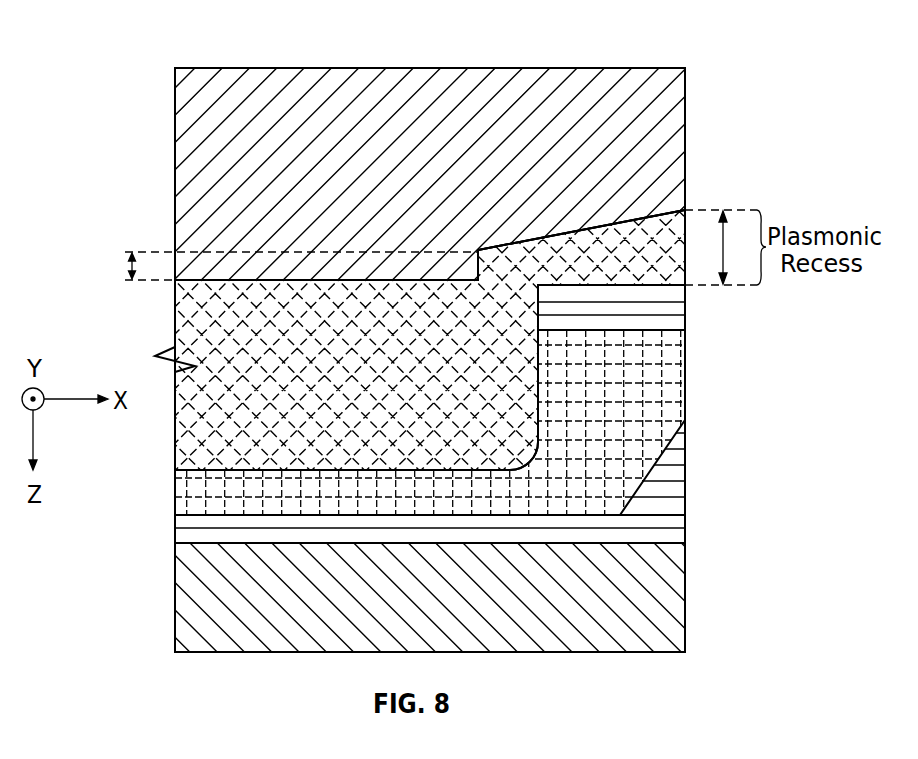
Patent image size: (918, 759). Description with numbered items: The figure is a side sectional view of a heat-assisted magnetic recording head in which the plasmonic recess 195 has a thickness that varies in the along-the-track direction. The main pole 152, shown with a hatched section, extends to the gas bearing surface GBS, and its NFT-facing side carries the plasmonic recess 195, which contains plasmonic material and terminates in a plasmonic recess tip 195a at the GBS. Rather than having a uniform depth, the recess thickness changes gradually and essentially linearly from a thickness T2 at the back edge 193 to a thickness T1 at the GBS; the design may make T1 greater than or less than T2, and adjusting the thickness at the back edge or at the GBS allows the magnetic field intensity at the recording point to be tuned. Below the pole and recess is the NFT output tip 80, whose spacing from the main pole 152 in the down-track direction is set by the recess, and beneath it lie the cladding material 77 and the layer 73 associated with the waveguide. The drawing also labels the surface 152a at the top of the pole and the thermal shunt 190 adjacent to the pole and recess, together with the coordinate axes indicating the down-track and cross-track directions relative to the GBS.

The main pole 152 is at (555, 80).
The main pole front surface 152a is at (686, 82).
The gas bearing surface GBS is at (686, 138).
The thermal shunt 190 is at (185, 430).
The back edge 193 is at (475, 272).
The plasmonic recess 195 is at (548, 250).
The plasmonic recess tip 195a is at (686, 267).
The NFT output tip 80 is at (672, 393).
The cladding material 77 is at (185, 520).
The cladding layer 73 is at (190, 586).
The recess thickness at the GBS T1 is at (727, 247).
The recess thickness at the back edge T2 is at (128, 263).